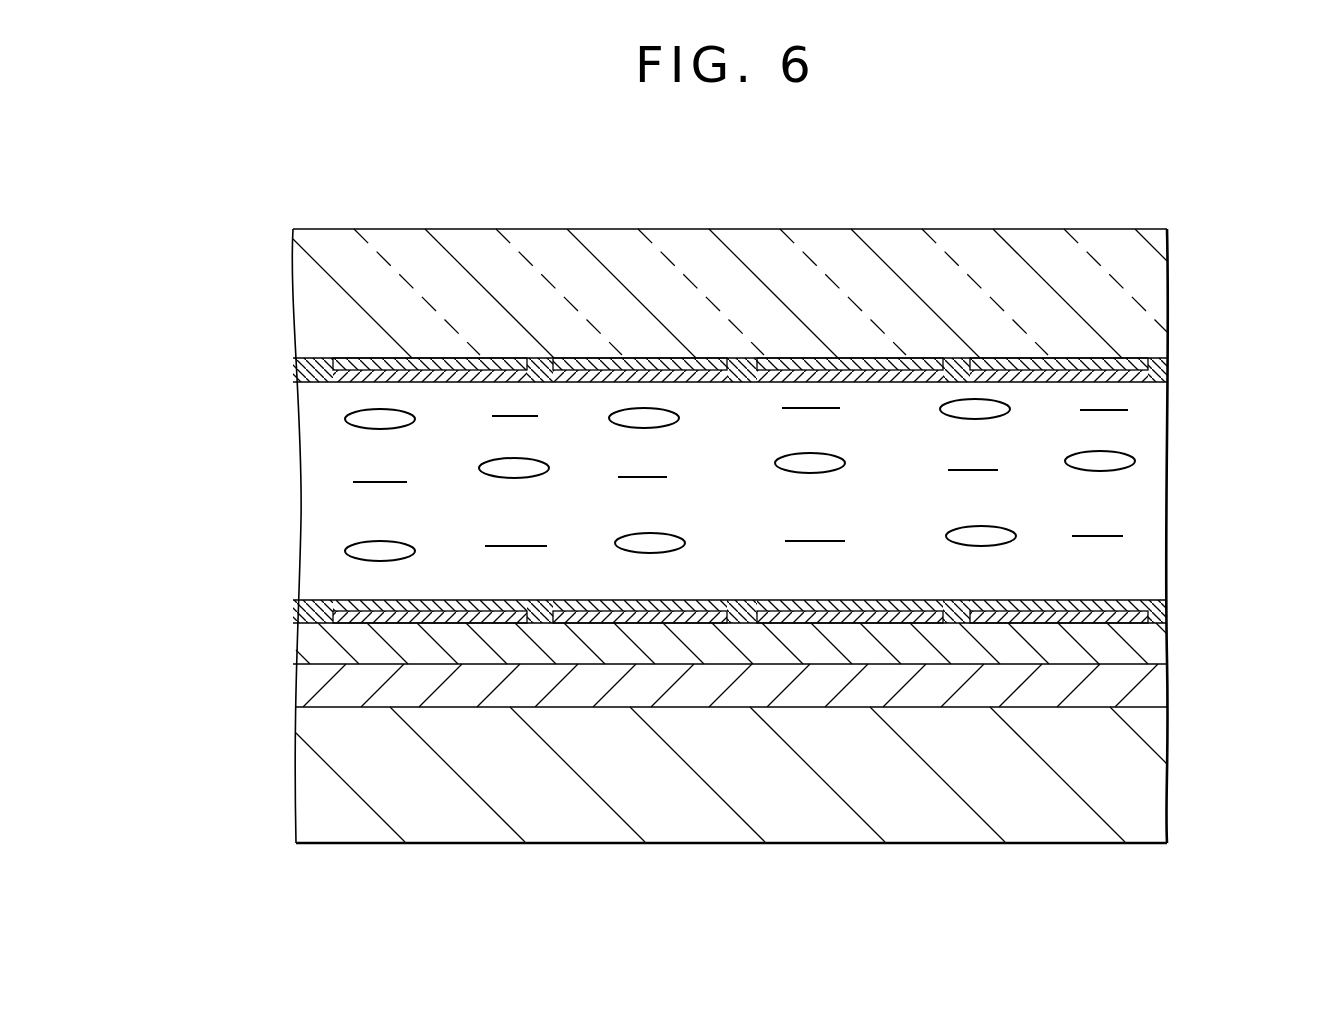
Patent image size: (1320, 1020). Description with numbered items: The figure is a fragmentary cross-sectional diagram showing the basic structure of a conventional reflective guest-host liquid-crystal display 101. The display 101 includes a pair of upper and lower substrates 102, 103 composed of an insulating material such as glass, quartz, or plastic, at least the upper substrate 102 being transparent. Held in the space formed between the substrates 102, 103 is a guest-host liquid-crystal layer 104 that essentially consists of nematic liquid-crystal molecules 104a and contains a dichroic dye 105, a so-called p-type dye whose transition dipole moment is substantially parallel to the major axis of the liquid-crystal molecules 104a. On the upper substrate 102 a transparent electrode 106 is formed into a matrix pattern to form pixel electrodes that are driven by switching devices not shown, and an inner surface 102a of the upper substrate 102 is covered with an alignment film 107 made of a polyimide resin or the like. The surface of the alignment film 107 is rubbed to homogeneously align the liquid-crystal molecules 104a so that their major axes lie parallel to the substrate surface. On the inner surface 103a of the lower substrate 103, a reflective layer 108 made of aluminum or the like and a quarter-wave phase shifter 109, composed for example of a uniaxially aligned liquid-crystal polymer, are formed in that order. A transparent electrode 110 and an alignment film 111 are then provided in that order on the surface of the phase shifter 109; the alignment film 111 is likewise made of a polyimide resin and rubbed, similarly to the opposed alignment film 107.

The reflective guest-host liquid-crystal display 101 is at (1073, 220).
The upper substrate 102 is at (318, 316).
The inner surface of the upper substrate 102a is at (312, 371).
The lower substrate 103 is at (335, 793).
The inner surface of the lower substrate 103a is at (320, 708).
The guest-host liquid-crystal layer 104 is at (332, 500).
The liquid-crystal molecules 104a is at (1135, 461).
The dichroic dye 105 is at (1105, 535).
The transparent electrode 106 is at (1135, 357).
The alignment film 107 is at (1150, 372).
The reflective layer 108 is at (1148, 686).
The λ/4 phase shifter 109 is at (1135, 646).
The transparent electrode 110 is at (1132, 600).
The alignment film 111 is at (1140, 610).